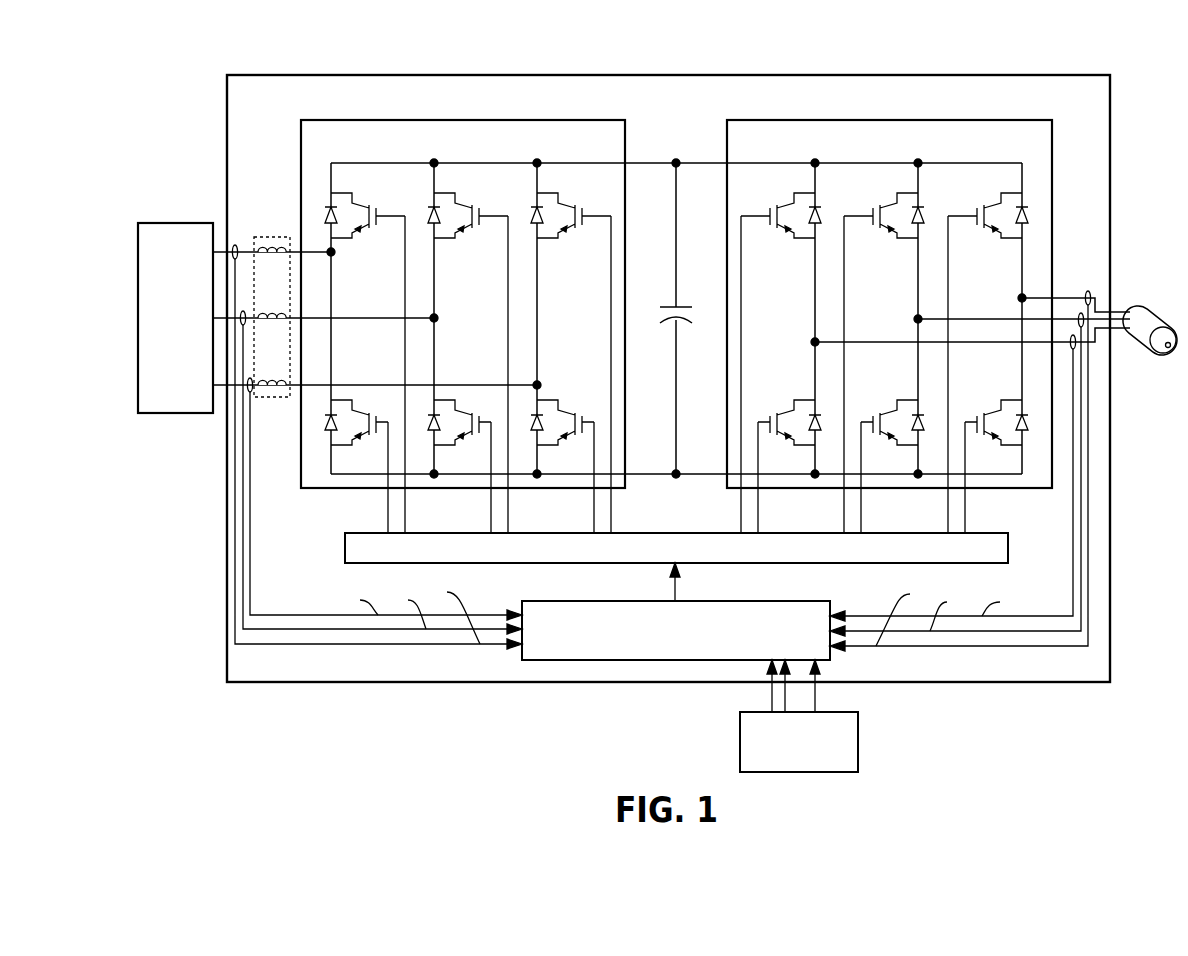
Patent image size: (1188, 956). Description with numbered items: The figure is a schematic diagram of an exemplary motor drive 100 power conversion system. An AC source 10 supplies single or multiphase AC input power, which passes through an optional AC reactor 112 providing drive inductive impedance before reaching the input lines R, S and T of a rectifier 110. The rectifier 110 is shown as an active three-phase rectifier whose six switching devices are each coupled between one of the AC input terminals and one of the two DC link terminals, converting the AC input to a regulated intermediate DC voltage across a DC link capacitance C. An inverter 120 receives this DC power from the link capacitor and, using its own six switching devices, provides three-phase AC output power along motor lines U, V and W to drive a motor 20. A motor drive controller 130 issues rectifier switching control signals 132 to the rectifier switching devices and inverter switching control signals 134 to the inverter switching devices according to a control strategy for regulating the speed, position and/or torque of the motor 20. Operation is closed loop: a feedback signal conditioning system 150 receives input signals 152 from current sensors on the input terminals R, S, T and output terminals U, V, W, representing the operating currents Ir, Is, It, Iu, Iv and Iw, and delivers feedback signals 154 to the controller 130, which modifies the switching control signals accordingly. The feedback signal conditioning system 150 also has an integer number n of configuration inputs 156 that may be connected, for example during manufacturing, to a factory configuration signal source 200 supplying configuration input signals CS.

The AC source 10 is at (176, 223).
The motor 20 is at (1152, 311).
The motor drive 100 is at (227, 97).
The rectifier 110 is at (301, 139).
The AC reactor 112 is at (272, 237).
The inverter 120 is at (727, 140).
The motor drive controller 130 is at (345, 549).
The rectifier switching control signals 132 is at (378, 516).
The inverter switching control signals 134 is at (732, 516).
The feedback signal conditioning system 150 is at (597, 601).
The input signals 152 is at (498, 655).
The feedback signals 154 is at (675, 590).
The configuration inputs 156 is at (763, 702).
The factory configuration signal source 200 is at (858, 750).